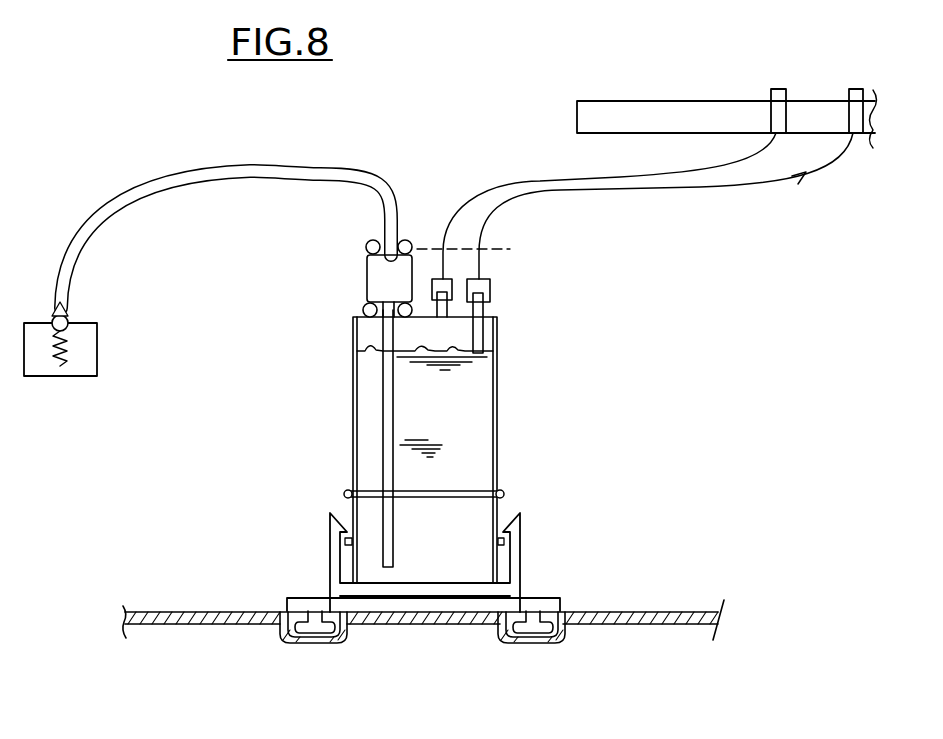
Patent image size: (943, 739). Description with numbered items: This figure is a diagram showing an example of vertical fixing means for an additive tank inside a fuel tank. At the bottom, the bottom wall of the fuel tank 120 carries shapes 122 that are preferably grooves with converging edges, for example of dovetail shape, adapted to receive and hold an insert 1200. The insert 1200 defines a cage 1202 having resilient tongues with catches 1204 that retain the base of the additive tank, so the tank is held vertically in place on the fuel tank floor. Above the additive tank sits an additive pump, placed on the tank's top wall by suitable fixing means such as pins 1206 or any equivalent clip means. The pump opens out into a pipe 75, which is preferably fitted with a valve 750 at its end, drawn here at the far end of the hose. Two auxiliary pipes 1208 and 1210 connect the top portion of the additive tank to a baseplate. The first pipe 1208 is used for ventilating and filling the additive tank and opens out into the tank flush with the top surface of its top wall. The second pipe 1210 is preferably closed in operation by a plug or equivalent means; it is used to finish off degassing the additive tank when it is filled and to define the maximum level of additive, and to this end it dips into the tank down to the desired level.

The pipe 75 is at (285, 167).
The valve 750 is at (60, 392).
The pins 1206 is at (352, 241).
The first pipe 1208 is at (468, 214).
The second pipe 1210 is at (567, 191).
The catches 1204 is at (333, 533).
The cage 1202 is at (330, 588).
The insert 1200 is at (548, 597).
The fuel tank 120 is at (202, 626).
The shapes 122 is at (315, 645).